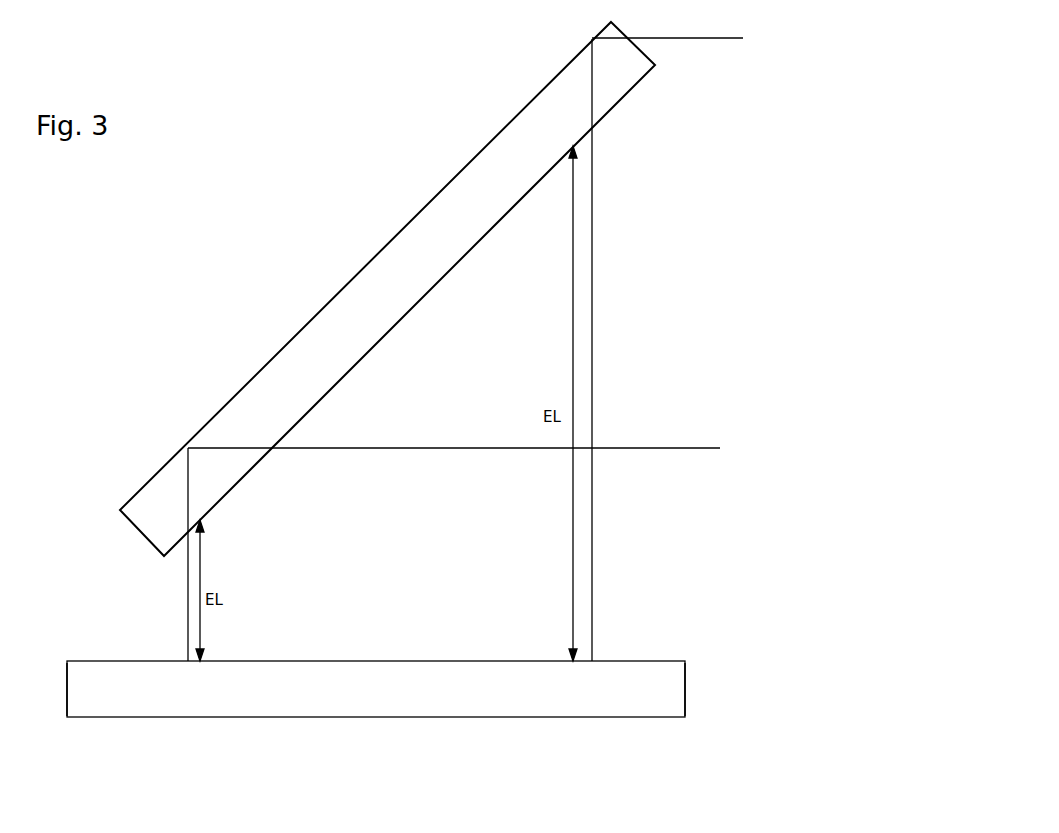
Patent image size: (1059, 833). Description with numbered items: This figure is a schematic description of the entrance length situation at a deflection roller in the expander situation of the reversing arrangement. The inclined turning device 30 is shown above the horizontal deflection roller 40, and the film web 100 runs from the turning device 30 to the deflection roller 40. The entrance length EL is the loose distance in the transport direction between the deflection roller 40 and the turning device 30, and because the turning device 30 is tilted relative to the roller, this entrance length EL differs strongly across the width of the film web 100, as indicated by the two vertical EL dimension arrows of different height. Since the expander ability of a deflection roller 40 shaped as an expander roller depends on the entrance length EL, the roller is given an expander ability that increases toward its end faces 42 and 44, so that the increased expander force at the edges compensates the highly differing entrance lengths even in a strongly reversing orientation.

The turning device 30 is at (278, 386).
The film web 100 is at (592, 369).
The deflection roller 40 is at (535, 708).
The end face 42 is at (687, 700).
The end face 44 is at (65, 708).